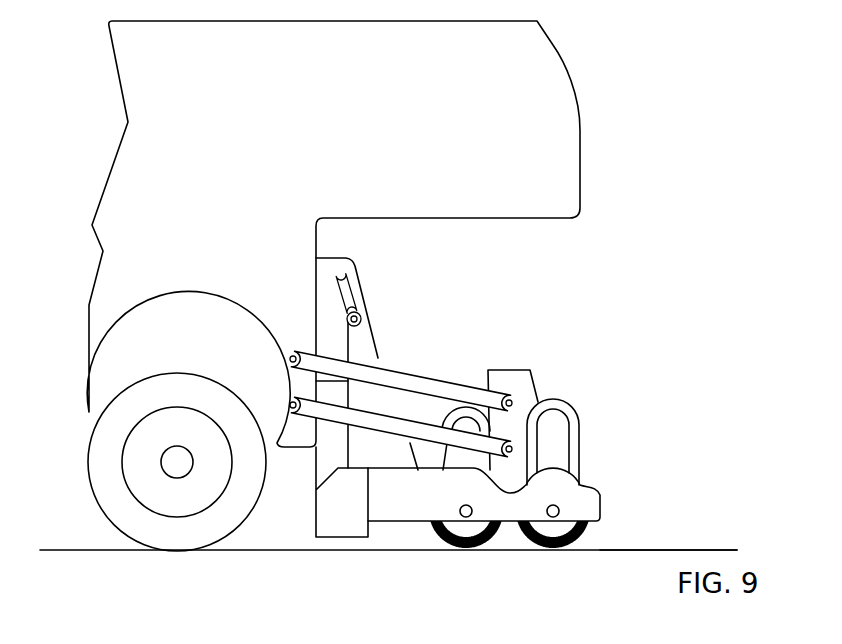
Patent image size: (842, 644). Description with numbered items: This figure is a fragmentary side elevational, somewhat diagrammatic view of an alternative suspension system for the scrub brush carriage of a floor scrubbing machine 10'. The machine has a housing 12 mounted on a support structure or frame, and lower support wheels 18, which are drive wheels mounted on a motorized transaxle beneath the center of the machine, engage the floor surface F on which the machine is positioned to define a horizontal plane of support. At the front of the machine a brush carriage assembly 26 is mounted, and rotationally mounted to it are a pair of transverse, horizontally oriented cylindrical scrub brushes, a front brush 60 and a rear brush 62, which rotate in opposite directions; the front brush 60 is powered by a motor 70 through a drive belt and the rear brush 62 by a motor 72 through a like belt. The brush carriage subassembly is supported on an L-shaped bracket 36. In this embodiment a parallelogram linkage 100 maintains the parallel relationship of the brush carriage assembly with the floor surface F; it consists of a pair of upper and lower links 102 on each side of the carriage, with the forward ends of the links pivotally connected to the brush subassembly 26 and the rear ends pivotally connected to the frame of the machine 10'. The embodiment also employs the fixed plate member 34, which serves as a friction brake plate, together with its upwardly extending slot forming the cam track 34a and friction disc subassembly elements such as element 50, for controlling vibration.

The machine 10' is at (388, 307).
The housing 12 is at (551, 44).
The lower support wheels 18 is at (172, 537).
The brush carriage assembly 26 is at (599, 490).
The fixed plate member 34 is at (331, 265).
The cam track 34a is at (345, 290).
The L-shaped bracket 36 is at (381, 357).
The friction disc subassembly element 50 is at (362, 318).
The front brush 60 is at (555, 530).
The rear brush 62 is at (465, 530).
The motor 70 is at (577, 423).
The motor 72 is at (498, 408).
The parallelogram linkage 100 is at (335, 426).
The upper and lower links 102 is at (460, 445).
The floor surface F is at (665, 548).